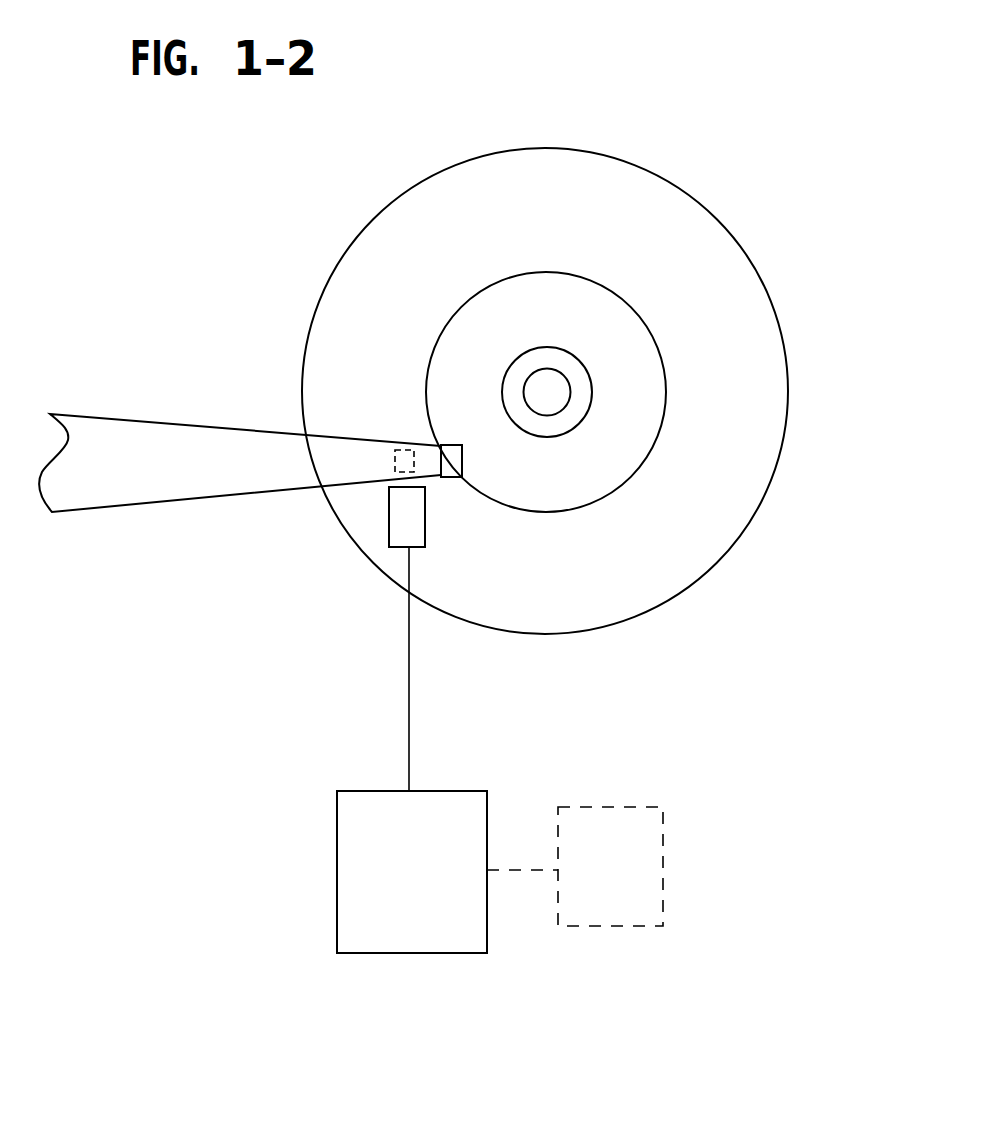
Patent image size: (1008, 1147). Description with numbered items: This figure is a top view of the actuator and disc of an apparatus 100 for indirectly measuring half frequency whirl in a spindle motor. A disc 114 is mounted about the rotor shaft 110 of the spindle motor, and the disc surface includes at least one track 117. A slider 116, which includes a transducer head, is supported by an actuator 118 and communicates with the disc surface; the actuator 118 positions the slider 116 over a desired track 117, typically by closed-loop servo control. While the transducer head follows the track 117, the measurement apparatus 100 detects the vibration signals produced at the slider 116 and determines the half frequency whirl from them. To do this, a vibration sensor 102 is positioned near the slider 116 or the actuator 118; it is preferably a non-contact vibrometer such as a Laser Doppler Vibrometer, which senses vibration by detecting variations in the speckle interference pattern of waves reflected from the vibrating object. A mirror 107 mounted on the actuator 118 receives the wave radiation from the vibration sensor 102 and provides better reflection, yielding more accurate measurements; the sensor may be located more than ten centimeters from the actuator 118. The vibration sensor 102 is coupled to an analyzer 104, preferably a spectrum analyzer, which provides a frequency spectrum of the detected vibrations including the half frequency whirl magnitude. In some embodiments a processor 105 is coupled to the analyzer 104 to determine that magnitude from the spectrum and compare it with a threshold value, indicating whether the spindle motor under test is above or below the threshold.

The apparatus 100 is at (377, 688).
The vibration sensor 102 is at (425, 528).
The analyzer 104 is at (440, 888).
The processor 105 is at (637, 892).
The mirror 107 is at (398, 448).
The rotor shaft 110 is at (547, 392).
The disc 114 is at (775, 323).
The slider 116 is at (452, 477).
The track 117 is at (655, 440).
The actuator 118 is at (90, 417).